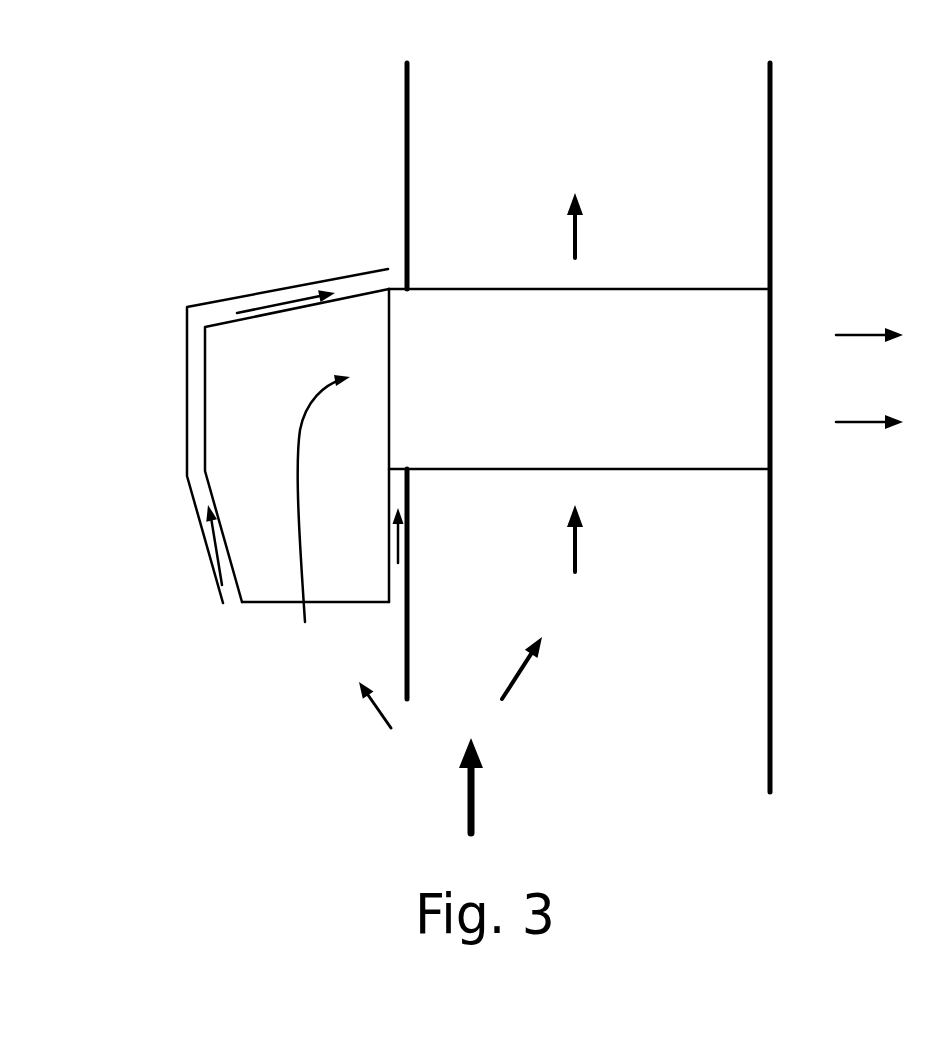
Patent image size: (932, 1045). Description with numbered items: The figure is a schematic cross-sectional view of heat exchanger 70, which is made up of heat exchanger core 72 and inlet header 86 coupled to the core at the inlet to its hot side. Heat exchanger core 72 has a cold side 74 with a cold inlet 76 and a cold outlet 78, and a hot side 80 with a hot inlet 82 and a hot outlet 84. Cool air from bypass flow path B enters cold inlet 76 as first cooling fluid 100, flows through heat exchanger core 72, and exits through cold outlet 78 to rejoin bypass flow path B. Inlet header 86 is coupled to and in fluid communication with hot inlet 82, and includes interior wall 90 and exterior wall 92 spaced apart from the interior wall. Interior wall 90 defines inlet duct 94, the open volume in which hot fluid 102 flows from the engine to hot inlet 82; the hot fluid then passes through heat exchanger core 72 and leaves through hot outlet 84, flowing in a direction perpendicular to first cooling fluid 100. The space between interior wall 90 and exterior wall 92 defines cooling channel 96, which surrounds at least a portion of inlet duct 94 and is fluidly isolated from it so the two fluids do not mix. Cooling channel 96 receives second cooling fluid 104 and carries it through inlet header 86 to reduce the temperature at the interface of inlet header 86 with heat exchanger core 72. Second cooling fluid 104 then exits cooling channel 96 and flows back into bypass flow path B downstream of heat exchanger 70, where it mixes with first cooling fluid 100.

The heat exchanger 70 is at (227, 99).
The heat exchanger core 72 is at (782, 308).
The cold side 74 is at (687, 288).
The cold inlet 76 is at (683, 472).
The cold outlet 78 is at (466, 288).
The hot side 80 is at (773, 360).
The hot inlet 82 is at (390, 424).
The hot outlet 84 is at (773, 442).
The inlet header 86 is at (227, 290).
The interior wall 90 is at (235, 591).
The exterior wall 92 is at (187, 491).
The inlet duct 94 is at (236, 398).
The cooling channel 96 is at (197, 450).
The first cooling fluid 100 is at (523, 670).
The hot fluid 102 is at (301, 609).
The second cooling fluid 104 is at (380, 710).
The bypass flow path B is at (475, 787).